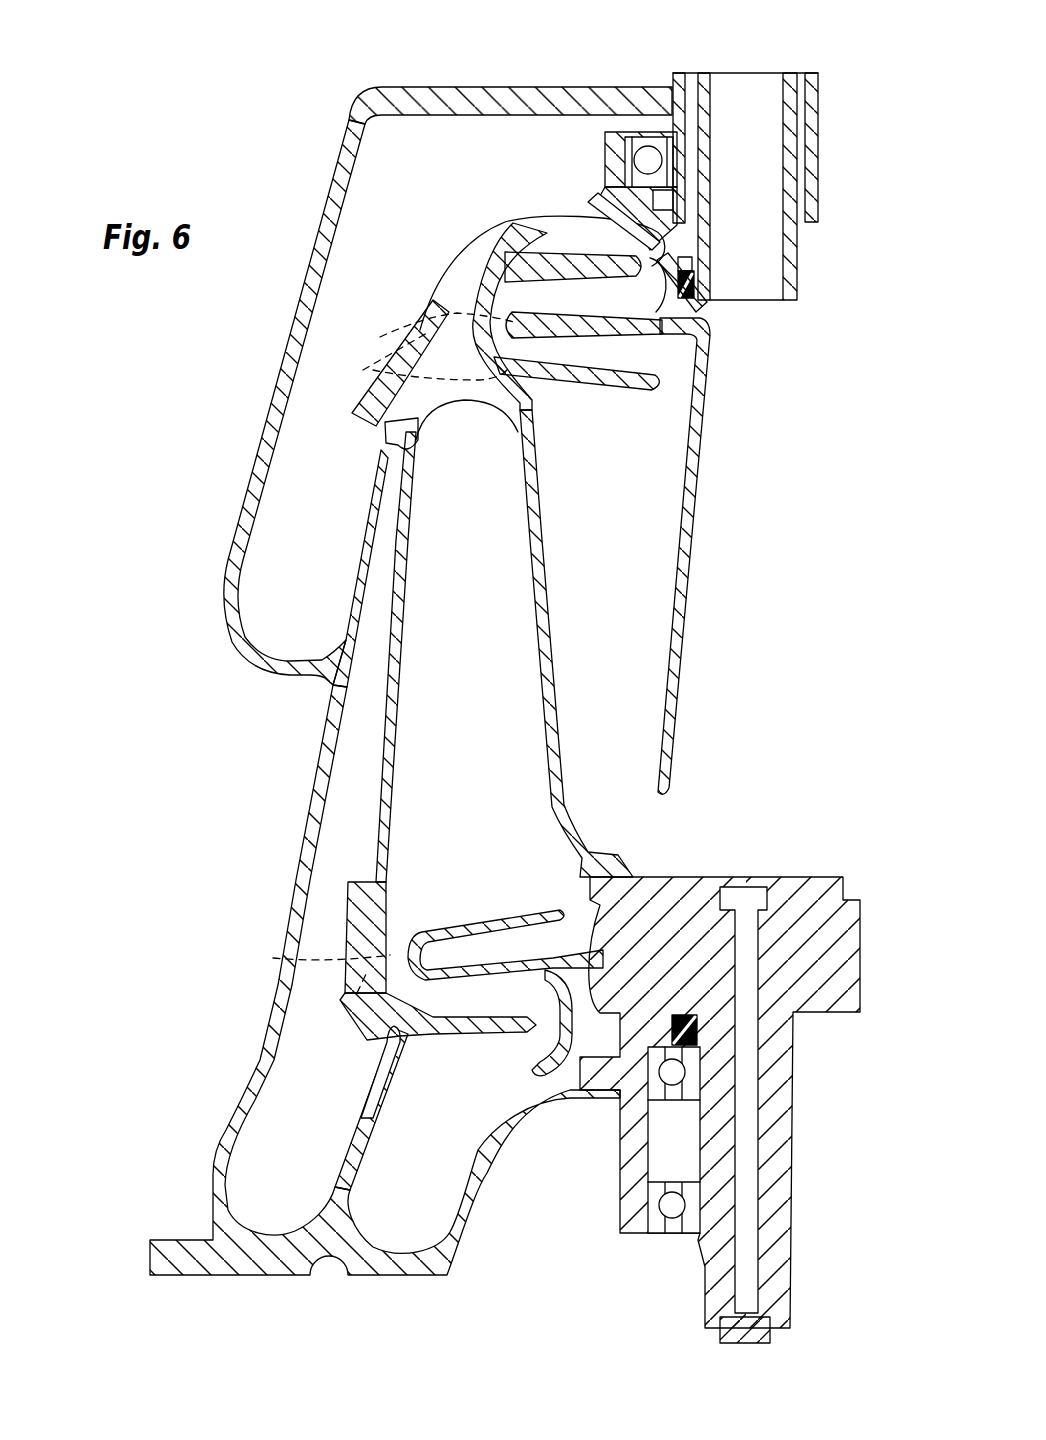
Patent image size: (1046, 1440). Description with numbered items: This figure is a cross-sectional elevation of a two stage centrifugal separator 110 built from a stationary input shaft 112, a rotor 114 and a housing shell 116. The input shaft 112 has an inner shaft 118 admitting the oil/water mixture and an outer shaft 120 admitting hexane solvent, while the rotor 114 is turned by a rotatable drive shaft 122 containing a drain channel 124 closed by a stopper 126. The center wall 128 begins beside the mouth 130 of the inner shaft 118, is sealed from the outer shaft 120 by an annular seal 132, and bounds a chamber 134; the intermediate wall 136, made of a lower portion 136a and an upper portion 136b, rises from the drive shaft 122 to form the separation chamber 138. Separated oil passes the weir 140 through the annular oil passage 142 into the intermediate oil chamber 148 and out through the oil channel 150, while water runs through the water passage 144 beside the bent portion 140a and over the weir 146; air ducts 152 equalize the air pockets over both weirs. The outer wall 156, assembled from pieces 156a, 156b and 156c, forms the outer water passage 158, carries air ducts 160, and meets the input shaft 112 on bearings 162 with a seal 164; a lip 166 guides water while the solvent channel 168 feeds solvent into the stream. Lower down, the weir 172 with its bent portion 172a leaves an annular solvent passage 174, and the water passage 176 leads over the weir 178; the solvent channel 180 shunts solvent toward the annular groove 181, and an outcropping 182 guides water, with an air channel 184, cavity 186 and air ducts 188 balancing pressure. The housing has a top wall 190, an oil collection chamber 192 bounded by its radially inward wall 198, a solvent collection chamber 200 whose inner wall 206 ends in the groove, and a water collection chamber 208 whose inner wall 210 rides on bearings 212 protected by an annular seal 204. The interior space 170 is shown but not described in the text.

The separator 110 is at (185, 510).
The stationary input shaft 112 is at (675, 73).
The rotor 114 is at (503, 218).
The housing shell 116 is at (321, 191).
The inner shaft 118 is at (782, 278).
The outer shaft 120 is at (695, 140).
The rotatable drive shaft 122 is at (710, 1250).
The drain channel 124 is at (750, 945).
The stopper 126 is at (722, 1340).
The center wall 128 is at (704, 545).
The mouth 130 is at (754, 316).
The annular seal 132 is at (700, 293).
The chamber 134 is at (771, 623).
The intermediate wall 136 is at (565, 765).
The lower portion 136a is at (550, 628).
The upper portion 136b is at (492, 405).
The separation chamber 138 is at (628, 588).
The weir 140 is at (603, 372).
The bent portion 140a is at (528, 345).
The annular oil passage 142 is at (671, 386).
The water passage 144 is at (542, 383).
The weir 146 is at (573, 262).
The intermediate oil chamber 148 is at (655, 353).
The oil channel 150 is at (415, 300).
The air ducts 152 is at (702, 318).
The outer wall 156 is at (404, 592).
The outer wall piece 156a is at (466, 252).
The outer wall piece 156b is at (404, 648).
The lower section 156c is at (345, 927).
The outer water passage 158 is at (548, 249).
The air ducts 160 is at (592, 200).
The bearings 162 is at (636, 132).
The seal 164 is at (662, 200).
The lip 166 is at (655, 270).
The solvent channel 168 is at (693, 240).
The central chamber 170 is at (486, 678).
The weir 172 is at (472, 922).
The bent portion 172a is at (438, 948).
The annular solvent passage 174 is at (575, 900).
The water passage 176 is at (398, 898).
The weir 178 is at (465, 1030).
The solvent channel 180 is at (273, 958).
The annular groove 181 is at (404, 1068).
The outcropping 182 is at (552, 1037).
The air channel 184 is at (588, 1098).
The cavity 186 is at (636, 1000).
The air ducts 188 is at (583, 962).
The top wall 190 is at (455, 87).
The oil collection chamber 192 is at (272, 550).
The radially inward wall 198 is at (358, 565).
The solvent collection chamber 200 is at (265, 1155).
The annular seal 204 is at (684, 1025).
The inner wall 206 is at (362, 1135).
The water collection chamber 208 is at (448, 1210).
The inner wall 210 is at (498, 1155).
The bearings 212 is at (668, 1185).